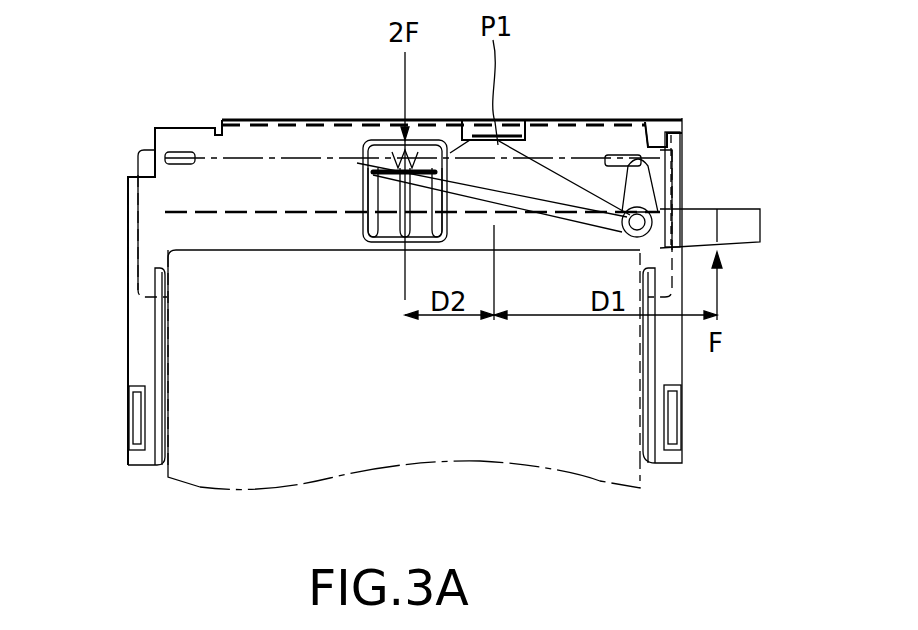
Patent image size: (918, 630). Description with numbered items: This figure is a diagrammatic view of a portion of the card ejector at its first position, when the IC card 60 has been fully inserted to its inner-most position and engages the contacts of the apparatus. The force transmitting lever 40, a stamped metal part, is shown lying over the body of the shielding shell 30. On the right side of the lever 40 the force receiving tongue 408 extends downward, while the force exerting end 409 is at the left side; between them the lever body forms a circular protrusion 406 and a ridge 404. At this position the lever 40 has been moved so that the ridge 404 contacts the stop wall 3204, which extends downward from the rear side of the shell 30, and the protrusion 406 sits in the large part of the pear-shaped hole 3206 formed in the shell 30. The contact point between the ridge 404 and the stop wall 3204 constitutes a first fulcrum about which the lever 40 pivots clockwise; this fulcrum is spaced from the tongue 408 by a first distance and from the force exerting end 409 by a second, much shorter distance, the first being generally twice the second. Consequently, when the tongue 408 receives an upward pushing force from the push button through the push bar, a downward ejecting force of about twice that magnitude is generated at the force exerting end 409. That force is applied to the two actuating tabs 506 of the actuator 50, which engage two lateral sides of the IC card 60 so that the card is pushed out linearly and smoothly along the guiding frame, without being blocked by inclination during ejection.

The shielding shell 30 is at (137, 343).
The force transmitting lever 40 is at (548, 182).
The actuator 50 is at (150, 200).
The IC card 60 is at (560, 458).
The ridge 404 is at (482, 140).
The circular protrusion 406 is at (648, 213).
The force receiving tongue 408 is at (745, 232).
The force exerting end 409 is at (358, 168).
The actuating tabs 506 is at (650, 115).
The stop wall 3204 is at (500, 140).
The pear-shaped hole 3206 is at (652, 165).